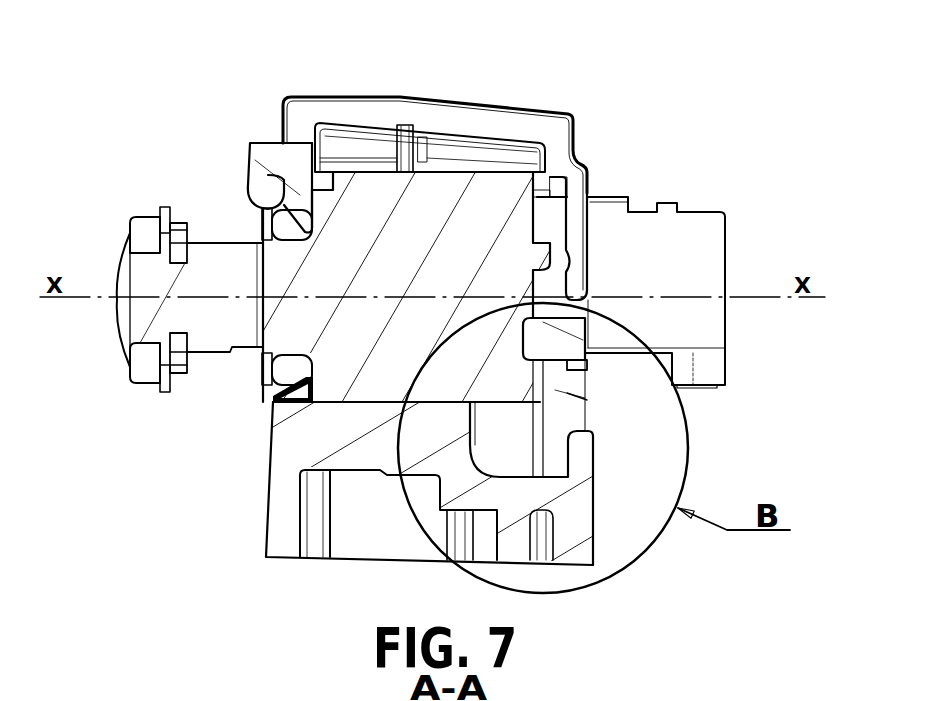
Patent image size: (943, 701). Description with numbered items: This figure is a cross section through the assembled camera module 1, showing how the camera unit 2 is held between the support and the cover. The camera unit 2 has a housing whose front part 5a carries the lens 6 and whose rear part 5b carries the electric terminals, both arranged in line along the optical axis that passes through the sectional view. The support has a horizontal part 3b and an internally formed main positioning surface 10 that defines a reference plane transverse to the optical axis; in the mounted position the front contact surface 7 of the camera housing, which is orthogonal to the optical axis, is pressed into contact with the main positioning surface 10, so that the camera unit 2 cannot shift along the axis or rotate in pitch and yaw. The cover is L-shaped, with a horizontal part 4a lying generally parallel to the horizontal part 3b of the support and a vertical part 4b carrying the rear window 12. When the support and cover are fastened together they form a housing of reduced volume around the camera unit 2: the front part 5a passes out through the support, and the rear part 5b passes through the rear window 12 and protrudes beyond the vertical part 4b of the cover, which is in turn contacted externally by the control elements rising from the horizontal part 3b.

The camera module 1 is at (603, 105).
The camera unit 2 is at (378, 200).
The horizontal part of the support 3b is at (282, 521).
The horizontal part of the cover 4a is at (537, 119).
The vertical part of the cover 4b is at (576, 384).
The front part of the camera housing 5a is at (218, 338).
The rear part of the camera housing 5b is at (672, 266).
The lens 6 is at (118, 318).
The front contact surface 7 is at (207, 170).
The main positioning surface 10 is at (313, 197).
The rear window 12 is at (588, 193).